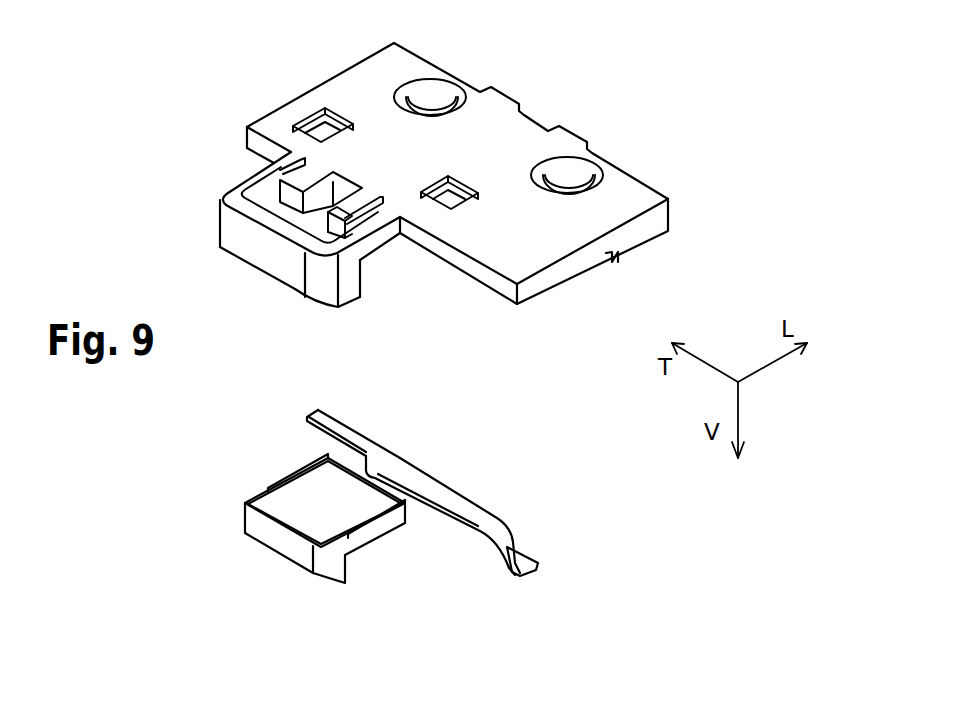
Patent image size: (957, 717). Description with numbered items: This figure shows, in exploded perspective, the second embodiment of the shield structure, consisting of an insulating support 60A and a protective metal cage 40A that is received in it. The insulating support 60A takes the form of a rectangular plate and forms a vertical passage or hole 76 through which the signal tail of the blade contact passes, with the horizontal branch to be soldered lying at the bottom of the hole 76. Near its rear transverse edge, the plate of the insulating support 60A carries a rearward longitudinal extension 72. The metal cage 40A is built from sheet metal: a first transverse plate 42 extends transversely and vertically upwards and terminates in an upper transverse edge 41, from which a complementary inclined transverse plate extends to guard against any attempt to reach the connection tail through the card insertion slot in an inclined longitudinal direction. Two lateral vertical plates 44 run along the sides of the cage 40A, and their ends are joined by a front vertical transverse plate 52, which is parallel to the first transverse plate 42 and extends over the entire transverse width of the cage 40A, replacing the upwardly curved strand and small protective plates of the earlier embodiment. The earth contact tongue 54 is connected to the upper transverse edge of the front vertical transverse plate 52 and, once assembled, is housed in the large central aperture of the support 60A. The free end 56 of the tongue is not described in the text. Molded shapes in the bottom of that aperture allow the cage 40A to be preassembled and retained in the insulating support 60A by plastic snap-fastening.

The insulating support 60A is at (462, 207).
The vertical passage or hole 76 is at (259, 196).
The rearward longitudinal extension 72 is at (264, 284).
The protective metal cage 40A is at (400, 491).
The earth contact tongue 54 is at (370, 428).
The front vertical transverse plate 52 is at (397, 458).
The contact tip 56 is at (518, 549).
The lateral vertical plates 44 is at (291, 488).
The upper transverse edge 41 is at (272, 540).
The first transverse plate 42 is at (298, 562).